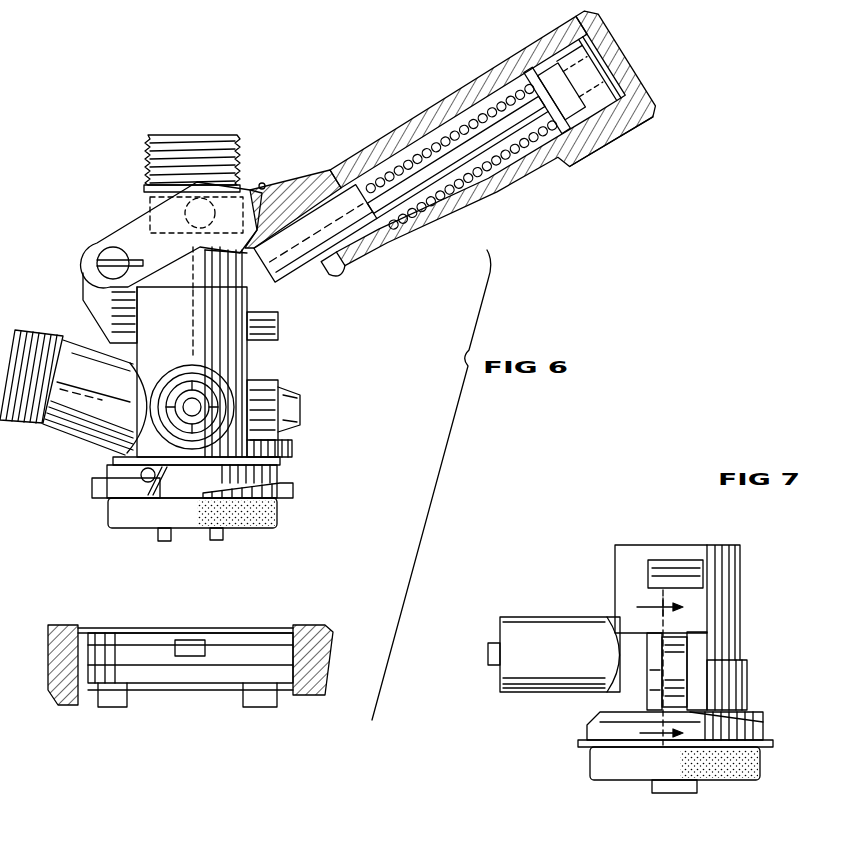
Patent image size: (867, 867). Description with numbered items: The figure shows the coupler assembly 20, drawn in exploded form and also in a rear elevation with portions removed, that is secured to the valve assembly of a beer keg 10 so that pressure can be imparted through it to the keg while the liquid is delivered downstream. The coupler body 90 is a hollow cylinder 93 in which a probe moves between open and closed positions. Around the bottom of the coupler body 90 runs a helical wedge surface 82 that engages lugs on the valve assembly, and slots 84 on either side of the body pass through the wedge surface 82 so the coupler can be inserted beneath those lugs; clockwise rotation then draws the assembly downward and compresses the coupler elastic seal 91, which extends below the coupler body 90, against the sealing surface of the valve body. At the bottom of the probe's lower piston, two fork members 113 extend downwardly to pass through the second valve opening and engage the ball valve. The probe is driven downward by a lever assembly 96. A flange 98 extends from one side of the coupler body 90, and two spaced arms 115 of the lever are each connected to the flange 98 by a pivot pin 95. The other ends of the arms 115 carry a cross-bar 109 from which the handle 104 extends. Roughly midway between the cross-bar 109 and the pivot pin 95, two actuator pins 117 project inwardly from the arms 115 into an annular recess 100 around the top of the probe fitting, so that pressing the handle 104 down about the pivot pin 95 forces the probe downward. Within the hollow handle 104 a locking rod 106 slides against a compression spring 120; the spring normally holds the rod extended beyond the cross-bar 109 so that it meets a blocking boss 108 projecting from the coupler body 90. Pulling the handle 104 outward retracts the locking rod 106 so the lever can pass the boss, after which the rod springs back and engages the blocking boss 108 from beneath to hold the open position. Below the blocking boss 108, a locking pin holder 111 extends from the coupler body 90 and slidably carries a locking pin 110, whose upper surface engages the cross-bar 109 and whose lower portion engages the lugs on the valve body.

In FIG. 6, the coupler assembly 20 is at (300, 78).
In FIG. 6, the wedge surface 82 is at (255, 530).
In FIG. 6, the slots 84 is at (178, 488).
In FIG. 6, the coupler body 90 is at (213, 356).
In FIG. 6, the coupler elastic seal 91 is at (118, 518).
In FIG. 6, the hollow cylinder 93 is at (140, 356).
In FIG. 6, the pivot pin 95 is at (110, 262).
In FIG. 6, the lever assembly 96 is at (264, 186).
In FIG. 6, the flange 98 is at (98, 300).
In FIG. 6, the annular recess 100 is at (148, 207).
In FIG. 6, the handle 104 is at (519, 183).
In FIG. 6, the locking rod 106 is at (315, 234).
In FIG. 6, the blocking boss 108 is at (263, 326).
In FIG. 7, the blocking boss 108 is at (690, 565).
In FIG. 6, the cross-bar 109 is at (332, 271).
In FIG. 6, the locking pin 110 is at (300, 404).
In FIG. 7, the locking pin 110 is at (676, 665).
In FIG. 6, the locking pin holder 111 is at (268, 450).
In FIG. 7, the locking pin holder 111 is at (656, 677).
In FIG. 6, the fork members 113 is at (166, 542).
In FIG. 6, the arms 115 is at (130, 232).
In FIG. 6, the actuator pins 117 is at (148, 205).
In FIG. 6, the compression spring 120 is at (410, 120).
In FIG. 7, the keg 10 is at (646, 665).